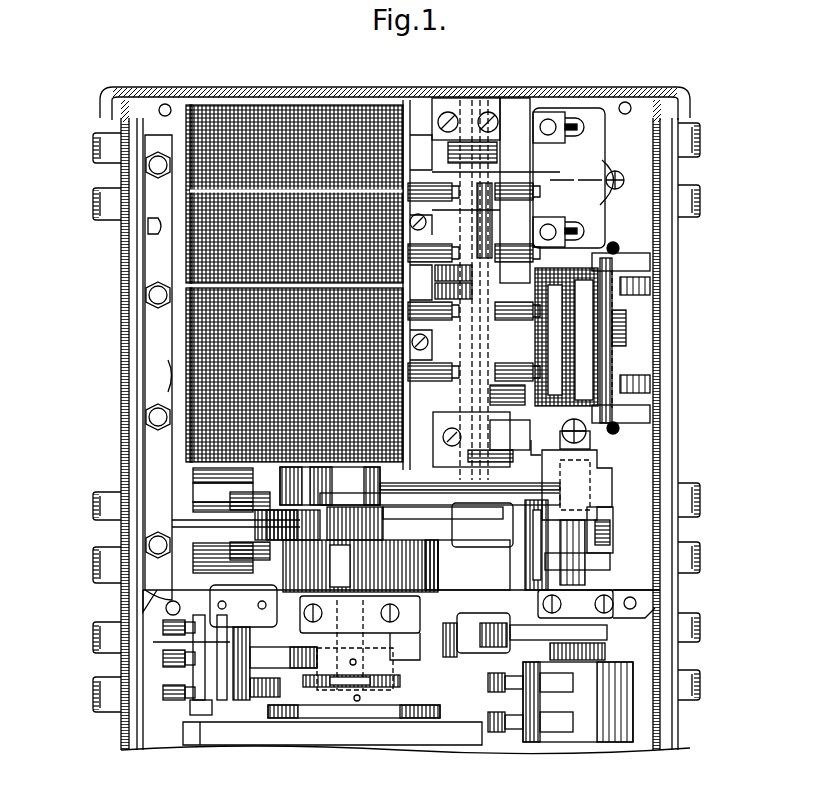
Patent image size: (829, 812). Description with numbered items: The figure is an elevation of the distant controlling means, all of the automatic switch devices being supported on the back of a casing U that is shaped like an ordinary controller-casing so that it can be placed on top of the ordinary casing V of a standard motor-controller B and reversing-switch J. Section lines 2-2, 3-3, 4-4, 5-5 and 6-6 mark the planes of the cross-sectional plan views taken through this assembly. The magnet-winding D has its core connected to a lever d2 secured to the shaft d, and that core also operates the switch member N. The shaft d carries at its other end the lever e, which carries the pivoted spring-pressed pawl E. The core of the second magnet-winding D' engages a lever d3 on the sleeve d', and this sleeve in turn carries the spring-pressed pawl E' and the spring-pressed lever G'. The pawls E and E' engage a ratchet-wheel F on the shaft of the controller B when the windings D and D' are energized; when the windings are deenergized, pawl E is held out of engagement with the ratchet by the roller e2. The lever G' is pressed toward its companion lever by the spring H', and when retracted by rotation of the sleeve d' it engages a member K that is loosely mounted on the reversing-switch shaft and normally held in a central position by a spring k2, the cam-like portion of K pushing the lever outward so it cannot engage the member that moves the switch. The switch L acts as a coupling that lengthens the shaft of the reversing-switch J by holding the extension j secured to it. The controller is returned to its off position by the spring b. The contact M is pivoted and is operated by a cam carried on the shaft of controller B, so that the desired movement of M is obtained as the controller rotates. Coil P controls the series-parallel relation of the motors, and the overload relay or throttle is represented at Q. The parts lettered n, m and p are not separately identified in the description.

The section line 2- 2 is at (722, 660).
The section line 3- 3 is at (712, 183).
The section line 4- 4 is at (712, 262).
The section line 5- 5 is at (718, 432).
The section line 6- 6 is at (718, 530).
The casing U is at (122, 394).
The ordinary casing V is at (128, 611).
The controller B is at (196, 738).
The magnet-winding D is at (273, 194).
The magnet-winding D' is at (275, 375).
The contact M is at (232, 696).
The ratchet-wheel F is at (330, 486).
The spring-pressed pawl E' is at (470, 478).
The spring-pressed pawl E is at (440, 499).
The roller e2 is at (379, 523).
The spring b is at (437, 563).
The shaft d is at (476, 336).
The spring H' is at (482, 525).
The switch member N is at (462, 456).
The sleeve d' is at (511, 435).
The lever d3 is at (500, 400).
The lever d2 is at (497, 152).
The contact n is at (453, 274).
The contact m is at (453, 292).
The plate p is at (566, 337).
The coil P is at (612, 370).
The member K is at (533, 446).
The spring k2 is at (548, 433).
The spring-pressed lever G' is at (591, 485).
The switch L is at (617, 547).
The overload relay or throttle Q is at (600, 206).
The extension j is at (606, 661).
The reversing-switch J is at (622, 688).
The lever e is at (578, 552).